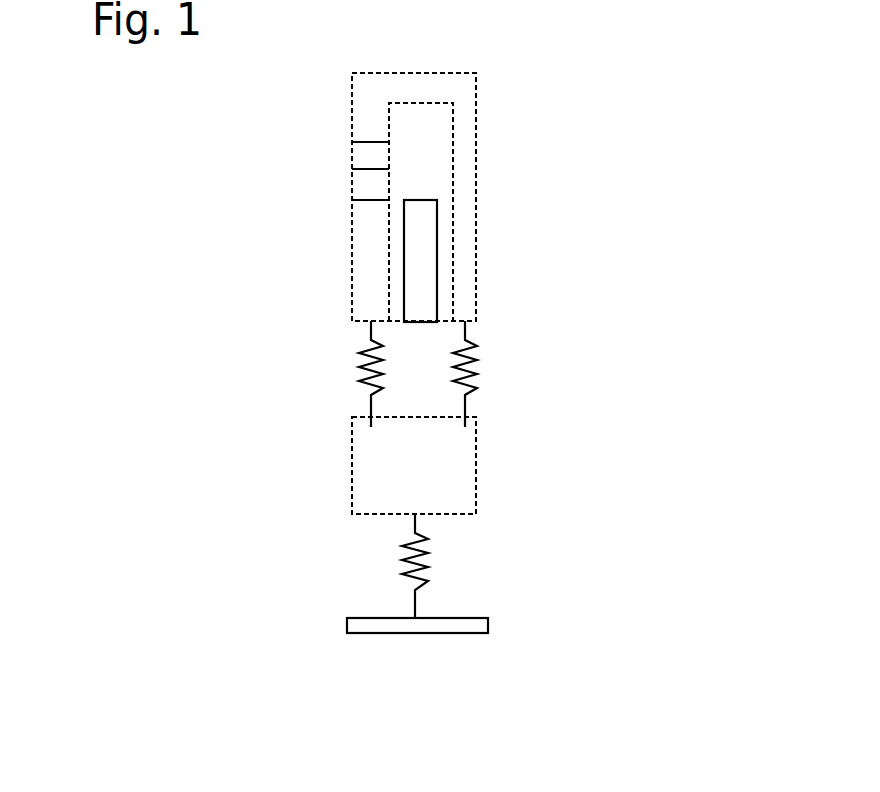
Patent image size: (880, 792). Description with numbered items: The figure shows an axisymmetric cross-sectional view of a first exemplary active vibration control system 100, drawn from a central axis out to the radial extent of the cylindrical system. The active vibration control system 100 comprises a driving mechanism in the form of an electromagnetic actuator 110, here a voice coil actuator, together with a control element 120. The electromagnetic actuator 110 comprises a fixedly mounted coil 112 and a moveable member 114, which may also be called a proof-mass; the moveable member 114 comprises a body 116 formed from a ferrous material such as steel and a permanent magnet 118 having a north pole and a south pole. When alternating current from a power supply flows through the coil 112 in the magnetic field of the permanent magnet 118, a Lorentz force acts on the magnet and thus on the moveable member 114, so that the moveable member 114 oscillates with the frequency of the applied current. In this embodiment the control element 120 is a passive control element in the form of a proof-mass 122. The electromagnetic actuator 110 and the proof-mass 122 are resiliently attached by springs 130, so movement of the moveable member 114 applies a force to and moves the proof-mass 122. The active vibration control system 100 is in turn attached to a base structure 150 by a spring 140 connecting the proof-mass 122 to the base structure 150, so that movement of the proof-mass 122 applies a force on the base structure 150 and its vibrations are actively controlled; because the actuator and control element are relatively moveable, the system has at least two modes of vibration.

The active vibration control system 100 is at (550, 46).
The electromagnetic actuator 110 is at (515, 178).
The coil 112 is at (427, 230).
The moveable member 114 is at (328, 108).
The body 116 is at (360, 265).
The permanent magnet 118 is at (353, 183).
The control element 120 is at (515, 464).
The proof-mass 122 is at (363, 480).
The springs 130 is at (360, 370).
The spring 140 is at (405, 573).
The base structure 150 is at (352, 628).